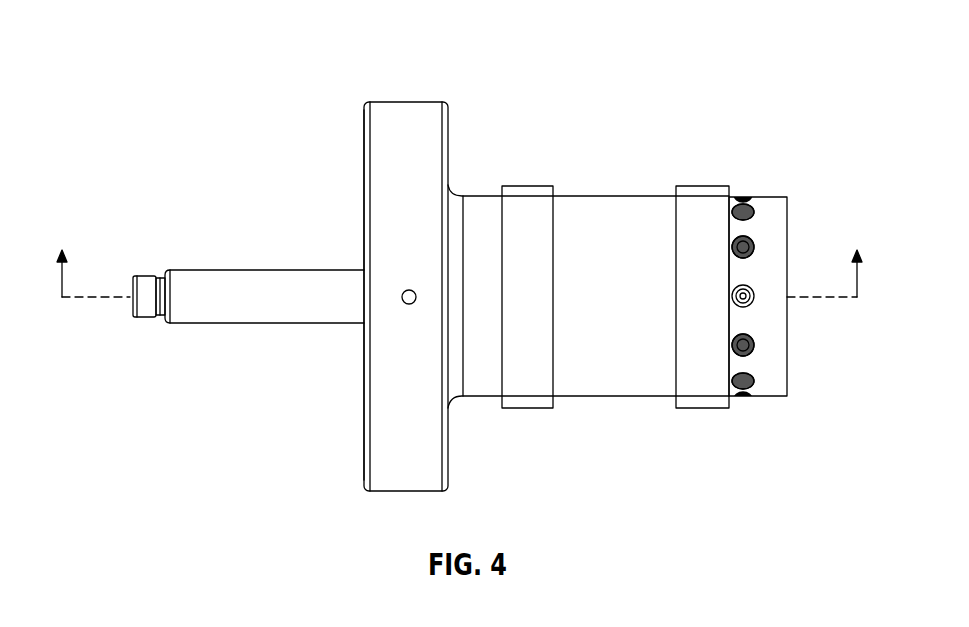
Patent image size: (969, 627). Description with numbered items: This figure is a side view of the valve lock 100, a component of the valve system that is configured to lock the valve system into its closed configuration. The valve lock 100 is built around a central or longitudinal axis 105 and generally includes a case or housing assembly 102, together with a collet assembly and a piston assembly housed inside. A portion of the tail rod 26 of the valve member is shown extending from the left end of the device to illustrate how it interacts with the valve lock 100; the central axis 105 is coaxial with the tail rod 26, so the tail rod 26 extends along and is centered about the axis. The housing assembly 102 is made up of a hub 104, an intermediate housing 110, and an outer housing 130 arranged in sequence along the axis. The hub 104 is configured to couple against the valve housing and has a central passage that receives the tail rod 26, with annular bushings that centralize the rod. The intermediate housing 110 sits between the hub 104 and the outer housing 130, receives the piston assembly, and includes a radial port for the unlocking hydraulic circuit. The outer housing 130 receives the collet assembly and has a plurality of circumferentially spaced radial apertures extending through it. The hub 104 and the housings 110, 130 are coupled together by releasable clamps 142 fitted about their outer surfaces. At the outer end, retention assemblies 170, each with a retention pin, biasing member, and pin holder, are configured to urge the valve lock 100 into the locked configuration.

The valve lock 100 is at (158, 46).
The housing assembly 102 is at (408, 116).
The hub 104 is at (382, 152).
The central axis 105 is at (98, 298).
The tail rod 26 is at (262, 270).
The intermediate housing 110 is at (601, 209).
The releasable clamps 142 is at (524, 197).
The outer housing 130 is at (775, 208).
The retention assemblies 170 is at (746, 240).